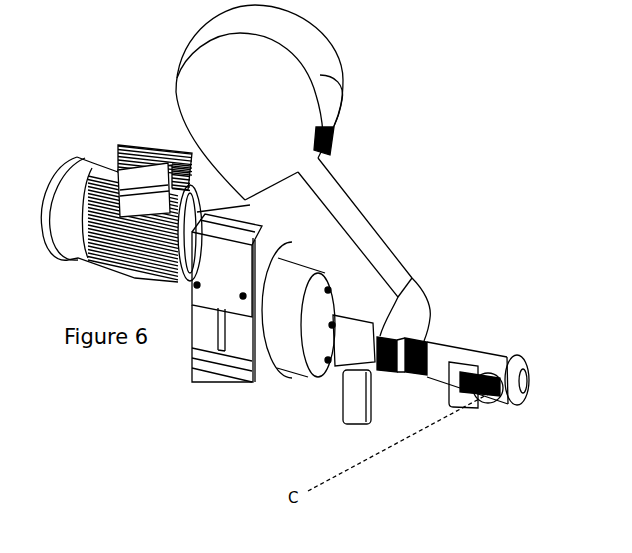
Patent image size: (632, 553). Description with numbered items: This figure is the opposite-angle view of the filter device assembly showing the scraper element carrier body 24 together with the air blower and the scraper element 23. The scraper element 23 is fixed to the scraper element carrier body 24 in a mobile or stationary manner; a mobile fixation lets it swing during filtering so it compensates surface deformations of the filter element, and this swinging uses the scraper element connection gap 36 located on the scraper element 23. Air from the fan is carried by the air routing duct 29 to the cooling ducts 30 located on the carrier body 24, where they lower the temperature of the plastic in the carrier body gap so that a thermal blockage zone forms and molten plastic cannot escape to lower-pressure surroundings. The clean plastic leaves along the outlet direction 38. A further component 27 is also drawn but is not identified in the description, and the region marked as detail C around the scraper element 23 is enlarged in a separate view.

The scraper element 23 is at (460, 402).
The scraper element carrier body 24 is at (471, 352).
The bracket 27 is at (358, 414).
The air routing duct 29 is at (356, 223).
The cooling ducts 30 is at (412, 384).
The scraper element connection gap 36 is at (287, 117).
The outlet direction 38 is at (108, 157).